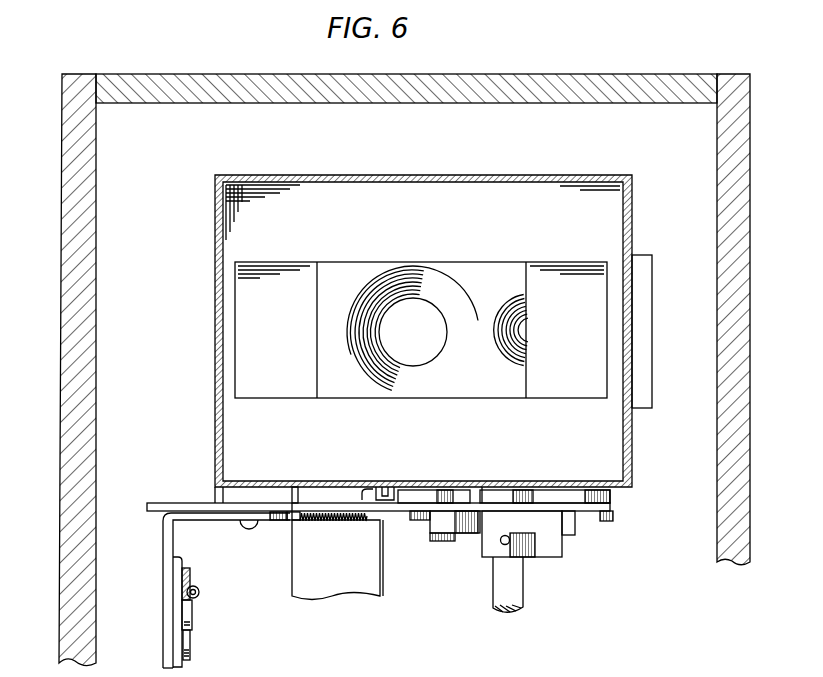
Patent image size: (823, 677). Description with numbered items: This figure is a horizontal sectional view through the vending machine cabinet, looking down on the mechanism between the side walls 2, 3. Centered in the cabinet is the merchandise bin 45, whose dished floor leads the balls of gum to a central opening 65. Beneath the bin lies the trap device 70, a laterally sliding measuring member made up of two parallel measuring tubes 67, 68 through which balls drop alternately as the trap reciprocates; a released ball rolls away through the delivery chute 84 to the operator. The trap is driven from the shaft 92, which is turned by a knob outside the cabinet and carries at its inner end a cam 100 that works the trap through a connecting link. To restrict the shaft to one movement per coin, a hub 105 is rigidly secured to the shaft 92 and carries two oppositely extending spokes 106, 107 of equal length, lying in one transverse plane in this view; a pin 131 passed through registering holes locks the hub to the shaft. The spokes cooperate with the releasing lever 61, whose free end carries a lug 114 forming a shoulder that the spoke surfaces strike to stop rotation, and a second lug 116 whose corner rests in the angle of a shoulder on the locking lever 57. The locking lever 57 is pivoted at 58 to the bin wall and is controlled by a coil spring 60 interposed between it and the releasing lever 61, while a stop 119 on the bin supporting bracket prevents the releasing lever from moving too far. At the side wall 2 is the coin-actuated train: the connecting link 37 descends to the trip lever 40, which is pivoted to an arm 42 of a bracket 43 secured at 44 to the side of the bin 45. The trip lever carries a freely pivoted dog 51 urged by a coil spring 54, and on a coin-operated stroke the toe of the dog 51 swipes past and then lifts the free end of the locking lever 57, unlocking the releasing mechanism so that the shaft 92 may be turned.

The side wall 2 is at (62, 317).
The side wall 3 is at (750, 320).
The merchandise bin 45 is at (215, 450).
The central opening 65 is at (350, 268).
The measuring tube 67 is at (392, 357).
The measuring tube 68 is at (512, 356).
The trap device 70 is at (652, 292).
The bracket 43 is at (187, 515).
The securing point 44 is at (247, 522).
The locking lever 57 is at (298, 500).
The delivery chute 84 is at (302, 573).
The coil spring 60 is at (343, 523).
The stop 119 is at (388, 488).
The releasing lever 61 is at (402, 495).
The cam 100 is at (510, 494).
The pivot 58 is at (613, 518).
The second lug 116 is at (411, 521).
The spoke 106 is at (466, 528).
The lug 114 is at (436, 533).
The hub 105 is at (535, 551).
The spoke 107 is at (568, 534).
The pin 131 is at (509, 544).
The shaft 92 is at (493, 593).
The dog 51 is at (175, 559).
The connecting link 37 is at (191, 582).
The coil spring 54 is at (199, 594).
The trip lever 40 is at (181, 600).
The arm 42 is at (167, 651).